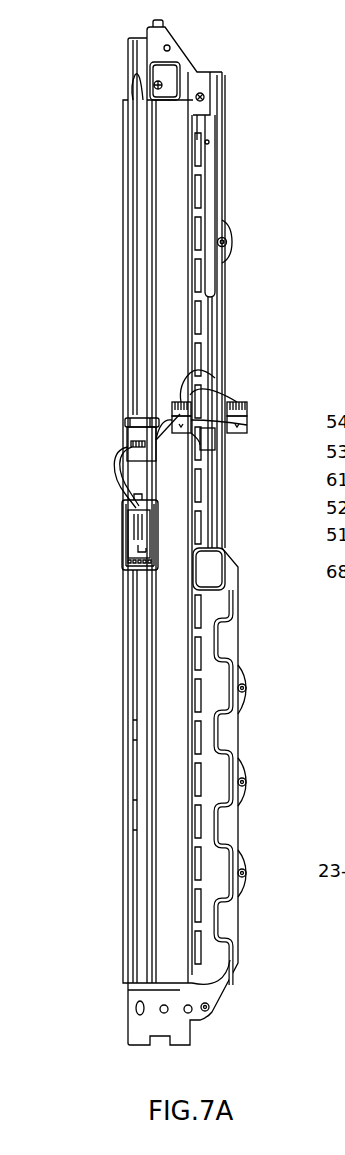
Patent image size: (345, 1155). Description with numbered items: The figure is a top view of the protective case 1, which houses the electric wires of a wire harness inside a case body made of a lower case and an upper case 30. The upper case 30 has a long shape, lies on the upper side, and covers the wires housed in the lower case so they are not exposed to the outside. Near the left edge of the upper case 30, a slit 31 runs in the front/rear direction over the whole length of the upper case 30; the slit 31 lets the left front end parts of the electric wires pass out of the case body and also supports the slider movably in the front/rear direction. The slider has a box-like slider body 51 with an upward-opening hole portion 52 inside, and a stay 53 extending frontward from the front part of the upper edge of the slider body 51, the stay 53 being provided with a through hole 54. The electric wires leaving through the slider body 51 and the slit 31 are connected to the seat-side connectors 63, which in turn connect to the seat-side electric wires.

The protective case 1 is at (203, 48).
The upper case 30 is at (122, 80).
The slit 31 is at (128, 748).
The slider body 51 is at (120, 547).
The hole portion 52 is at (143, 532).
The stay 53 is at (137, 463).
The through hole 54 is at (131, 422).
The seat-side connectors 63 is at (213, 437).